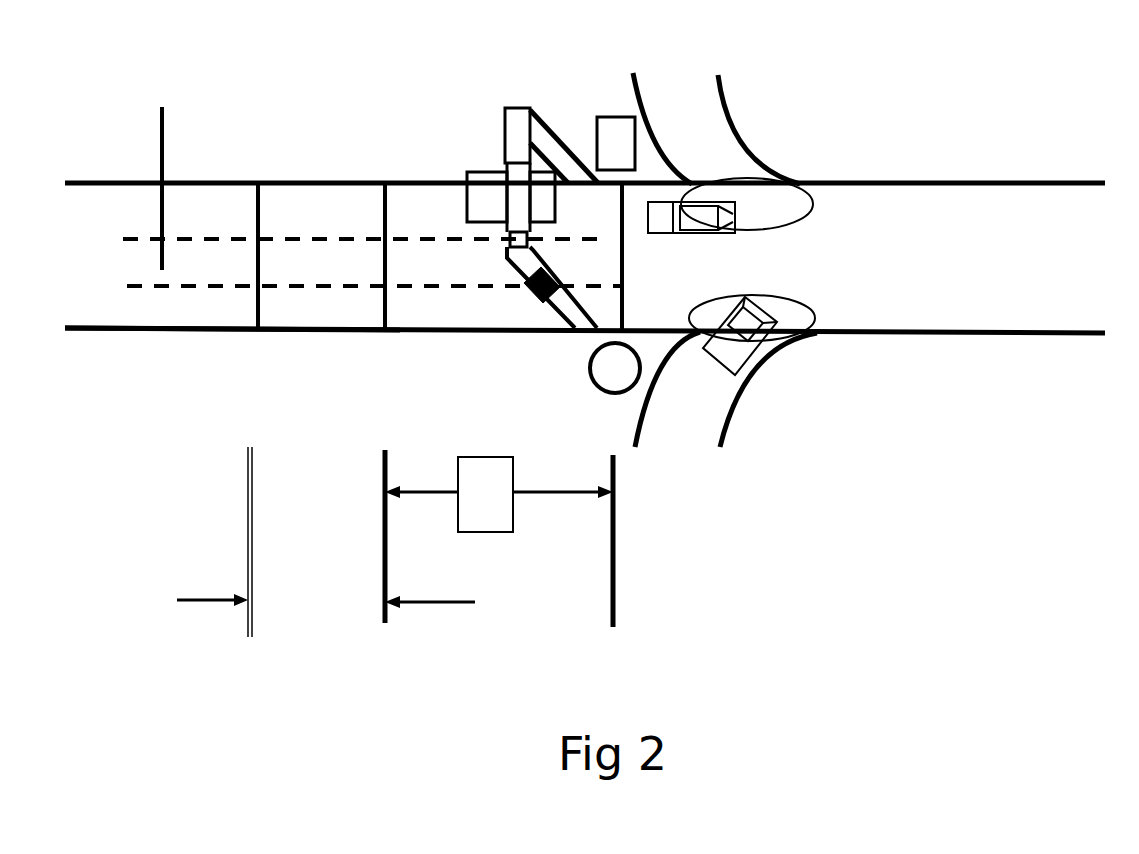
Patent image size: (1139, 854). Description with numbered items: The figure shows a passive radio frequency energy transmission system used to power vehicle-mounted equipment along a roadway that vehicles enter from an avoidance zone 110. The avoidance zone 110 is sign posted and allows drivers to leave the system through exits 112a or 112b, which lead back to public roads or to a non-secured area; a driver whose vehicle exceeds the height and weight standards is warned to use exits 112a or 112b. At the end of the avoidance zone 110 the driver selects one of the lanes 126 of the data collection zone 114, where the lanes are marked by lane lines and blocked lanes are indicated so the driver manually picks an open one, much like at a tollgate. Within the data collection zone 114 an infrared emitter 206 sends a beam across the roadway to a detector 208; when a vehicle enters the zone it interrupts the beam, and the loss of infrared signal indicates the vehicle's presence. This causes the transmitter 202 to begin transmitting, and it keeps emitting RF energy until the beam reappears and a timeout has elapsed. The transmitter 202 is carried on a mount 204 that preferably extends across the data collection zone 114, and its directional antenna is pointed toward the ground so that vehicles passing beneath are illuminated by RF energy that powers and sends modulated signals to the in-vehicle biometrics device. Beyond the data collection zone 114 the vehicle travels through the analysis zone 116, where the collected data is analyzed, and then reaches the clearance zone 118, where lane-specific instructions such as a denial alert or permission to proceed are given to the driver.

The avoidance zone 110 is at (915, 312).
The exit 112a is at (712, 128).
The exit 112b is at (715, 405).
The data collection zone 114 is at (488, 523).
The analysis zone 116 is at (322, 305).
The clearance zone 118 is at (155, 328).
The lane 126 is at (165, 168).
The transmitter 202 is at (480, 172).
The mount 204 is at (520, 108).
The infrared emitter 206 is at (588, 373).
The detector 208 is at (605, 117).